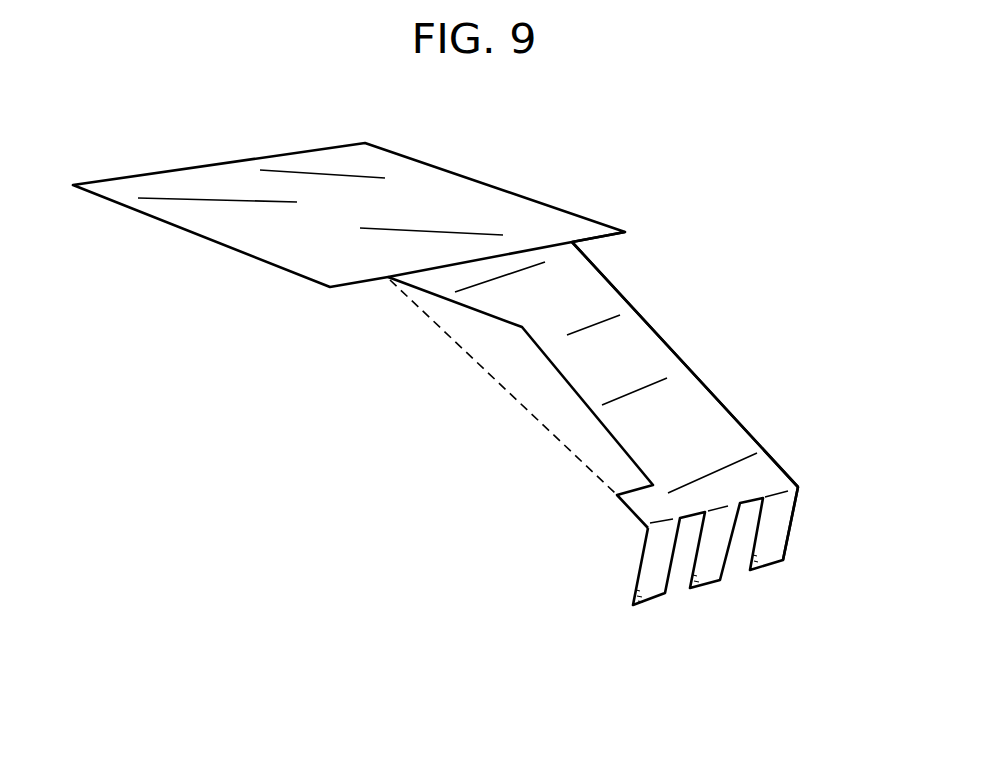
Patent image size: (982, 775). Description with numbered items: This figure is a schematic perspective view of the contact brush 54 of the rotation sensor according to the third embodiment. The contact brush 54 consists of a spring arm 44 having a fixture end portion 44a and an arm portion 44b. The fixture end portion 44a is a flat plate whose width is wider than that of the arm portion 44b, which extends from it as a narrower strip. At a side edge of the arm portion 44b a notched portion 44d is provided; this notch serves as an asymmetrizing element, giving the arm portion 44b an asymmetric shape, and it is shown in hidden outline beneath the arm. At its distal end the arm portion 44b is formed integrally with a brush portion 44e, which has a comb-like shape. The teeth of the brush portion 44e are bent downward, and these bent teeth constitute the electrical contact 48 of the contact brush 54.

The spring arm 44 is at (715, 397).
The fixture end portion 44a is at (393, 175).
The arm portion 44b is at (623, 338).
The notched portion 44d is at (573, 395).
The brush portion 44e is at (768, 547).
The electrical contact 48 is at (660, 572).
The contact brush 54 is at (648, 210).